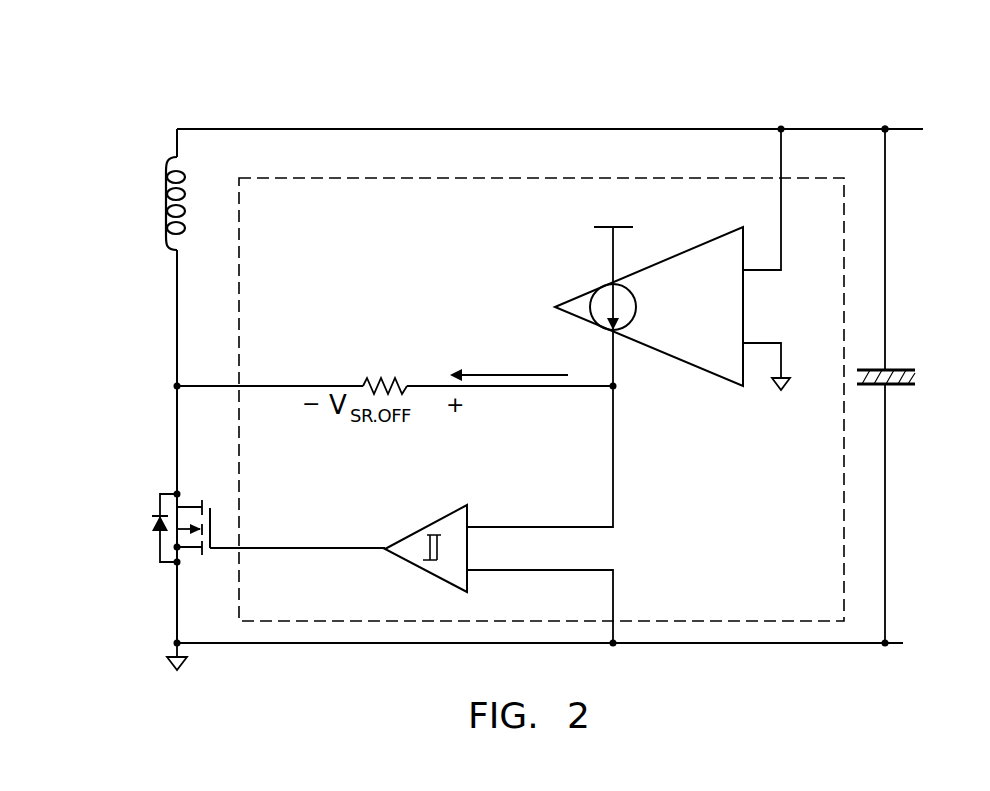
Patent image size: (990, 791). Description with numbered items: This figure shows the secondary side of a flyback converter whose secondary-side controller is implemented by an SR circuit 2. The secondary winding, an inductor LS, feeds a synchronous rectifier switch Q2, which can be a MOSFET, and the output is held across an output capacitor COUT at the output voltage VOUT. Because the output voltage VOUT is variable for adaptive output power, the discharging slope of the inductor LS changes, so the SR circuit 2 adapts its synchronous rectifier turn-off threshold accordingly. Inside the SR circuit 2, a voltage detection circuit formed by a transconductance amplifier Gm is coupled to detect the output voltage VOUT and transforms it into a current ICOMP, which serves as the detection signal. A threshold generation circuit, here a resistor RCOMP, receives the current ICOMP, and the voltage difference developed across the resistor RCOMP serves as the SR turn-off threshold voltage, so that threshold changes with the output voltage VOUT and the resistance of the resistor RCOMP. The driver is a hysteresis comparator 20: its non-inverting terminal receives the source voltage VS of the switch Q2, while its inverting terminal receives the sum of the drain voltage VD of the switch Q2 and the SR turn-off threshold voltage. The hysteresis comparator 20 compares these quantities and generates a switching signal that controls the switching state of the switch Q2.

The SR circuit 2 is at (240, 178).
The hysteresis comparator 20 is at (427, 572).
The secondary winding (inductor) LS is at (165, 205).
The switch Q2 is at (156, 500).
The output capacitor COUT is at (897, 366).
The output voltage VOUT is at (885, 127).
The drain voltage VD is at (175, 386).
The source voltage VS is at (175, 643).
The resistor RCOMP is at (380, 372).
The current ICOMP is at (509, 361).
The transconductance amplifier Gm is at (649, 306).